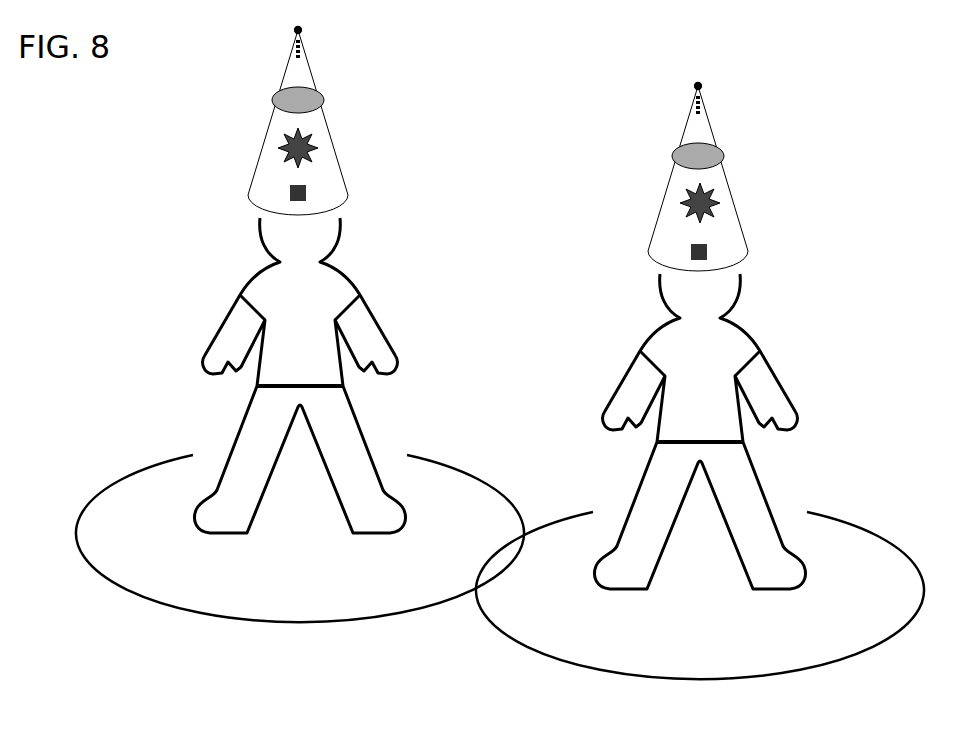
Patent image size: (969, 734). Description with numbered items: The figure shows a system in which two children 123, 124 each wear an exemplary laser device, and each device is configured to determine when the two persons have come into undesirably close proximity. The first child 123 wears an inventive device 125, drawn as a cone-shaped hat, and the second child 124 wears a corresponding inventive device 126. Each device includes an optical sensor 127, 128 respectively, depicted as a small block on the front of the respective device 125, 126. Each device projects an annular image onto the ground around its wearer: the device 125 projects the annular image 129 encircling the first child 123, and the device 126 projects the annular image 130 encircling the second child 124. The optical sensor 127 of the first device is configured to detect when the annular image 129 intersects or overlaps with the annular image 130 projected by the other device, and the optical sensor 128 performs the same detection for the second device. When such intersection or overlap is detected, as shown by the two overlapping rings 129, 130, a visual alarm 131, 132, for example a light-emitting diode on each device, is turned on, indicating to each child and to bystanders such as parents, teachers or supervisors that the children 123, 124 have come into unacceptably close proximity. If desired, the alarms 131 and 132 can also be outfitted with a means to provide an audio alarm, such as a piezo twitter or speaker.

The child 123 is at (300, 375).
The child 124 is at (700, 431).
The inventive device 125 is at (347, 190).
The inventive device 126 is at (747, 243).
The optical sensor 127 is at (289, 192).
The optical sensor 128 is at (690, 252).
The annular image 129 is at (300, 559).
The annular image 130 is at (700, 615).
The visual alarm 131 is at (288, 148).
The visual alarm 132 is at (688, 203).